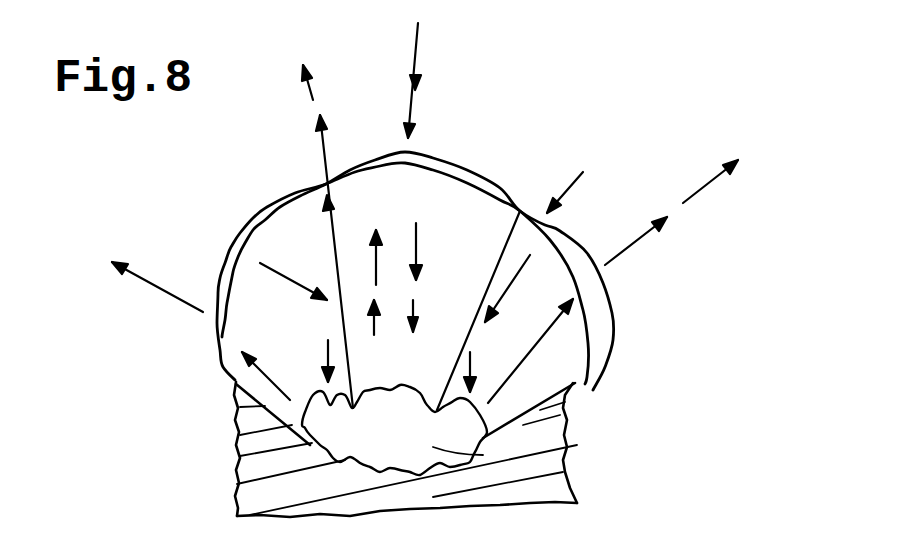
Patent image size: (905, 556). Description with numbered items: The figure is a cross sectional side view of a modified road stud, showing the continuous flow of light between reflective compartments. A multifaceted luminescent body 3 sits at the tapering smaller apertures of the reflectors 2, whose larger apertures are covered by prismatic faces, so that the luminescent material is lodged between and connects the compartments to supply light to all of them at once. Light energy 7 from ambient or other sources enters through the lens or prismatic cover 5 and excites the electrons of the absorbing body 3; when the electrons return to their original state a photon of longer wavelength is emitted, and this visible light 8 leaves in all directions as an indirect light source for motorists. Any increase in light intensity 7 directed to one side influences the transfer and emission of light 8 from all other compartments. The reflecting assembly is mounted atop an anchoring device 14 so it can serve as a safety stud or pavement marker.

The reflectors 2 is at (452, 215).
The luminescent body 3 is at (490, 460).
The lens or prismatic cover 5 is at (423, 150).
The incoming light 7 is at (587, 191).
The emitted light 8 is at (634, 262).
The anchoring device 14 is at (227, 452).